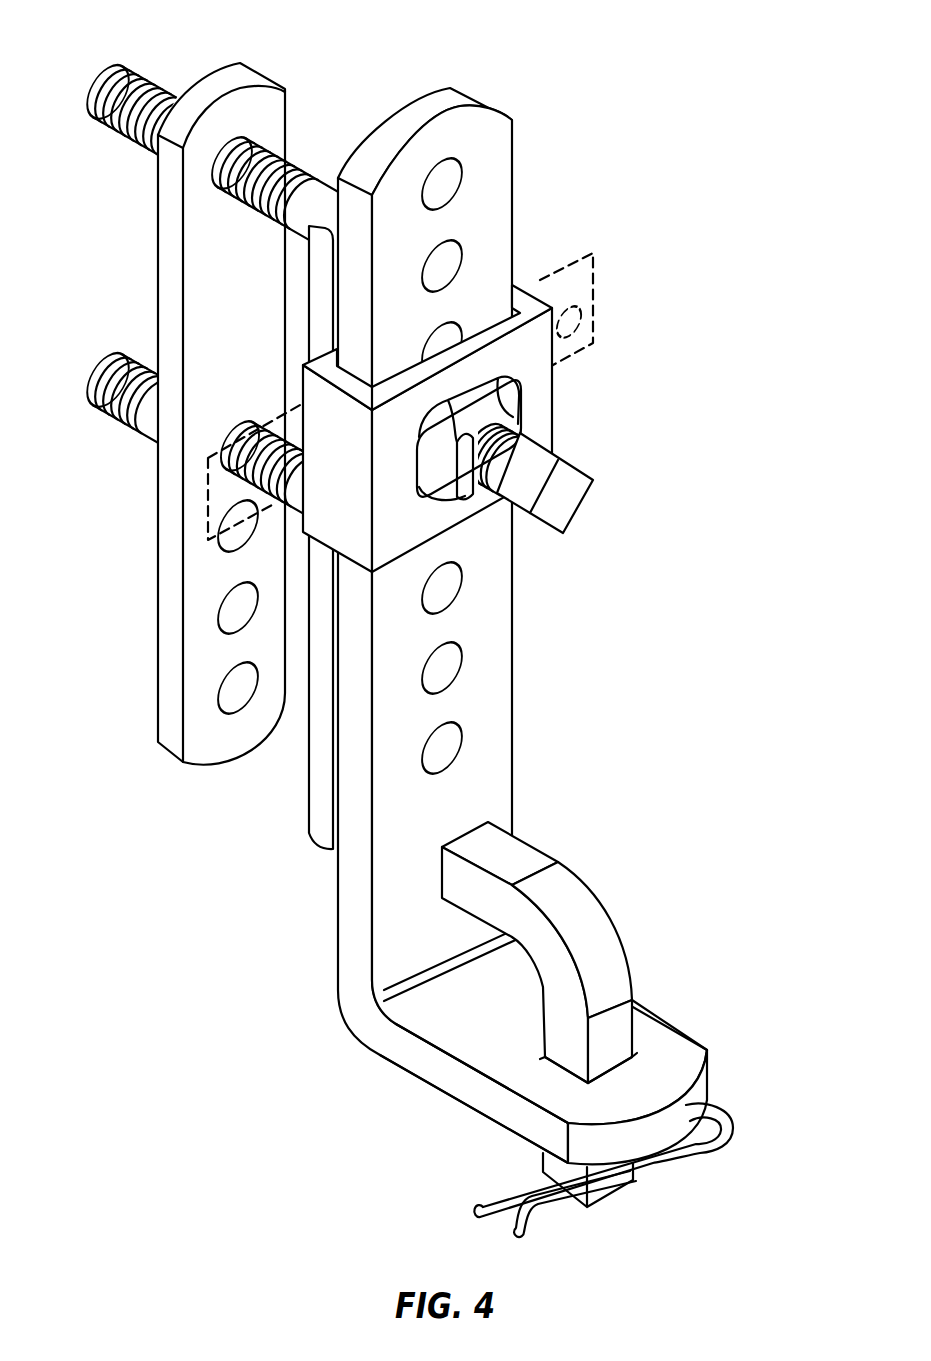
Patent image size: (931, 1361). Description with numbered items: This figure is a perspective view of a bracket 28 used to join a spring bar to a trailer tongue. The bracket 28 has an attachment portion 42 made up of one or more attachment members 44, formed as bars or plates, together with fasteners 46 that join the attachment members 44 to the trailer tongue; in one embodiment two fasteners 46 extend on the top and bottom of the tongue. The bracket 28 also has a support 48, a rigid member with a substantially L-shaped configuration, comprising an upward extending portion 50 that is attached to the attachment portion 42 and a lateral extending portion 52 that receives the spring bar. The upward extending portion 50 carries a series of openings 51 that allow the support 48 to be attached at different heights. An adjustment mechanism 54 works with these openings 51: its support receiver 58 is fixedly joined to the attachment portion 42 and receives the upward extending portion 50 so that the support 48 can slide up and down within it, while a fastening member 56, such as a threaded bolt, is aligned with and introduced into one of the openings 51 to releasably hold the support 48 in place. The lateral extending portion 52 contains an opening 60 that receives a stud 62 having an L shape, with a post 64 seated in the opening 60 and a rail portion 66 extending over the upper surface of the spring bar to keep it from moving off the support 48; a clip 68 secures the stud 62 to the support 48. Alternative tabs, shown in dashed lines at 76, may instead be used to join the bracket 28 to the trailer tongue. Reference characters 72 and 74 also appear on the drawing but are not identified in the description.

The bracket 28 is at (436, 619).
The attachment portion 42 is at (283, 81).
The attachment member 44 is at (158, 262).
The fastener 46 is at (138, 78).
The support 48 is at (486, 712).
The upward extending portion 50 is at (516, 614).
The opening 51 is at (424, 676).
The lateral extending portion 52 is at (652, 1030).
The adjustment mechanism 54 is at (553, 415).
The fastening member 56 is at (571, 494).
The support receiver 58 is at (553, 373).
The opening 60 is at (630, 1062).
The stud 62 is at (598, 910).
The post 64 is at (618, 1022).
The rail portion 66 is at (538, 845).
The clip 68 is at (718, 1144).
The foot 72 is at (538, 1087).
The rounded end 74 is at (707, 1101).
The tabs 76 is at (205, 494).